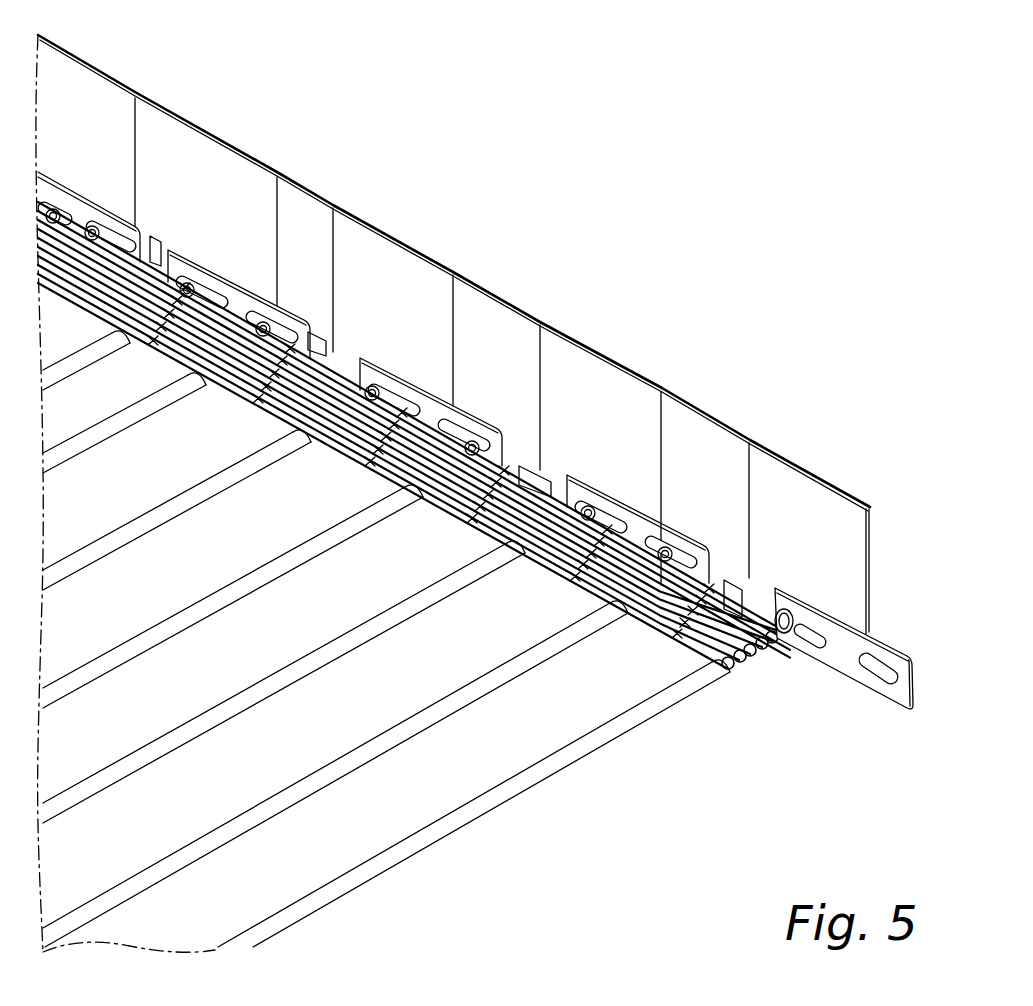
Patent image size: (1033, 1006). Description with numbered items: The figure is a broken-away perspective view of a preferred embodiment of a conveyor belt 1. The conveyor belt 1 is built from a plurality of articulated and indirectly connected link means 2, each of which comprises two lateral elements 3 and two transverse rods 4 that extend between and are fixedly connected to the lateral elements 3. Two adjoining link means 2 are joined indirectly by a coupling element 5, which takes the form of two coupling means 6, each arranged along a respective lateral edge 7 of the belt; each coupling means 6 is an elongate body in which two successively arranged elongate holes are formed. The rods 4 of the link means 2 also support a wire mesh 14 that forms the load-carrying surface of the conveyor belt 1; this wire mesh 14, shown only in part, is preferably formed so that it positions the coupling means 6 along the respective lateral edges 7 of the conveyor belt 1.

The conveyor belt 1 is at (454, 334).
The link means 2 is at (471, 246).
The lateral element 3 is at (372, 246).
The transverse rod 4 is at (283, 556).
The coupling element 5 is at (197, 244).
The coupling means 6 is at (238, 303).
The lateral edge 7 is at (160, 240).
The wire mesh 14 is at (233, 397).